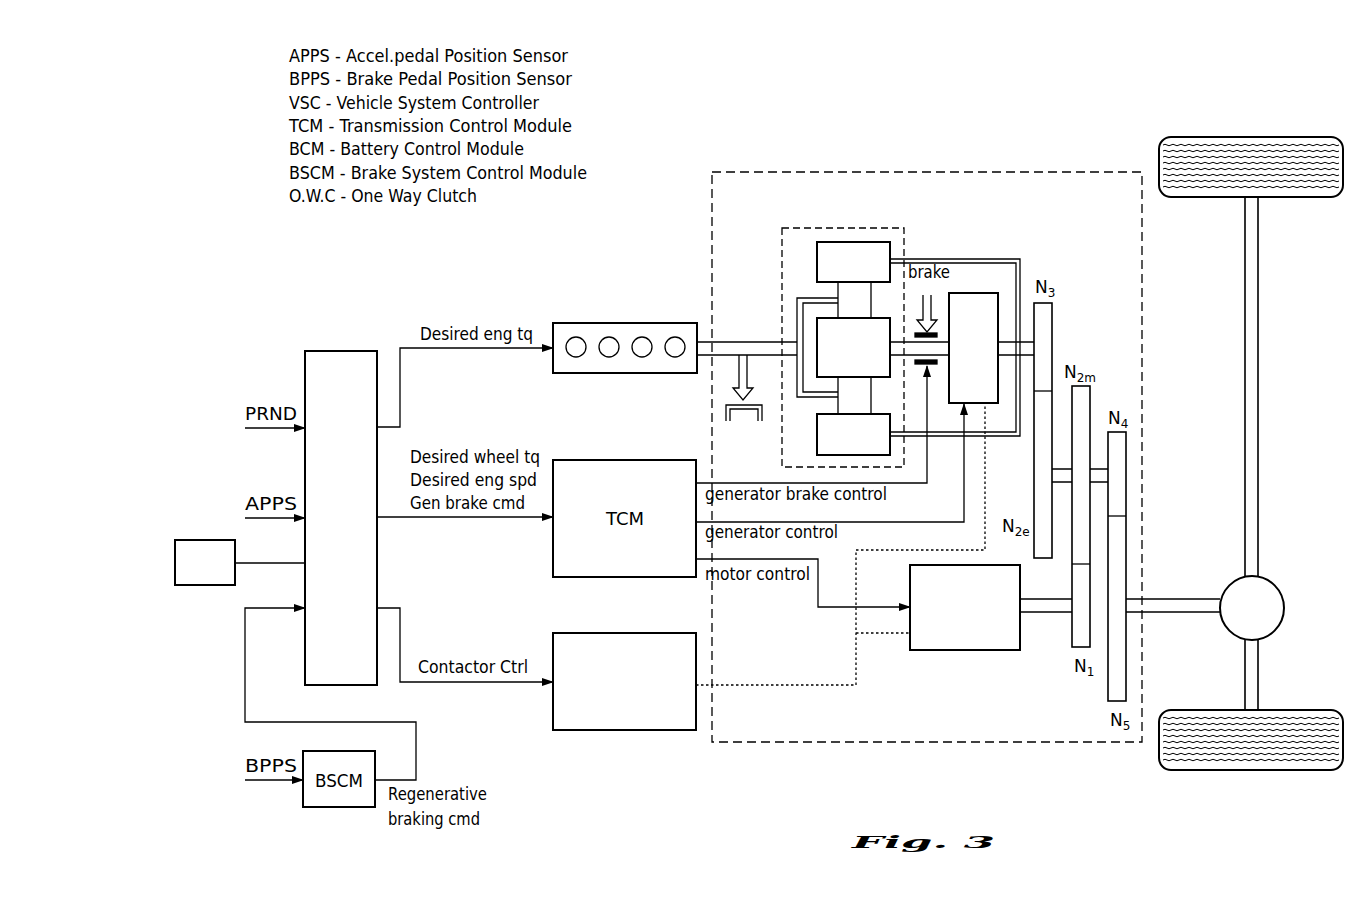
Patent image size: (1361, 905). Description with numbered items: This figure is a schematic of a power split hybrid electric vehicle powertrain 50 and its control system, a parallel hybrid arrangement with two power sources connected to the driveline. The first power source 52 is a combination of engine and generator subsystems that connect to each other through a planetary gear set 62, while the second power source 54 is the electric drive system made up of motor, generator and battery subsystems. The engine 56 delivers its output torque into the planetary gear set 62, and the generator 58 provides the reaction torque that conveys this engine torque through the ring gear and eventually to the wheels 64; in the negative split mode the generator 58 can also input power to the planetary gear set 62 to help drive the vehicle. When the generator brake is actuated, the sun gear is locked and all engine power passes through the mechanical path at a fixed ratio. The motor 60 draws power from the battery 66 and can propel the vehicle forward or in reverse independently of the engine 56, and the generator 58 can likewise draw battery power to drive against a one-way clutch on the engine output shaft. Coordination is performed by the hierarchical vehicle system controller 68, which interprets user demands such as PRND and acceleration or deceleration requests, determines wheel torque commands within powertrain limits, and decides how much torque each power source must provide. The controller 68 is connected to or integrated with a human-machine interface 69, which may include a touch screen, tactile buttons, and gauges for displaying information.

The power split hybrid electric vehicle powertrain 50 is at (755, 757).
The first power source 52 is at (733, 290).
The second power source 54 is at (837, 703).
The engine 56 is at (609, 373).
The generator 58 is at (973, 293).
The motor 60 is at (960, 650).
The planetary gear set 62 is at (797, 226).
The wheels 64 is at (1250, 137).
The battery 66 is at (620, 730).
The vehicle system controller 68 is at (341, 351).
The human-machine interface 69 is at (216, 573).